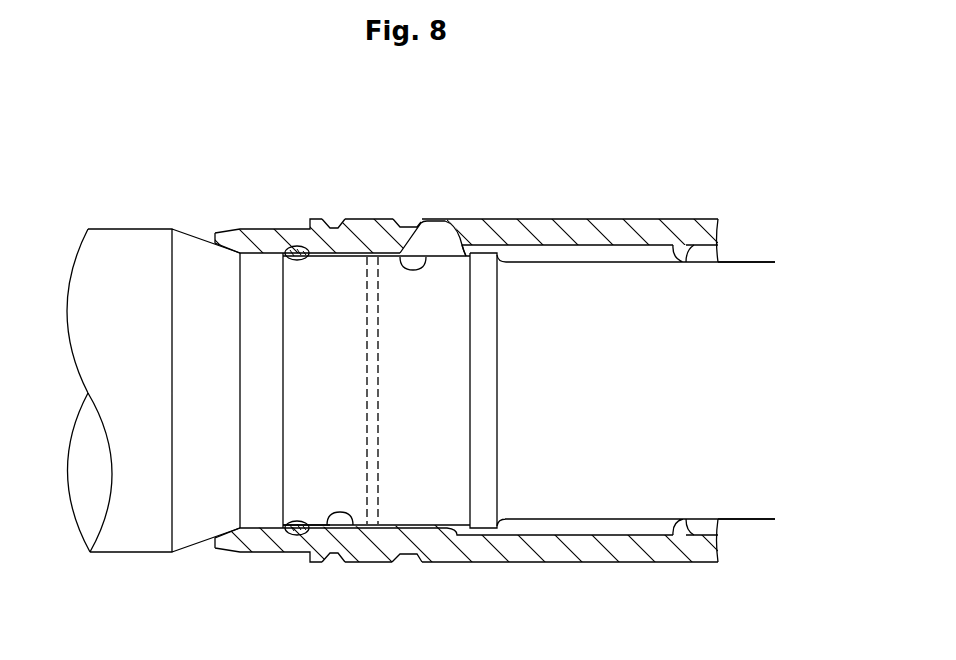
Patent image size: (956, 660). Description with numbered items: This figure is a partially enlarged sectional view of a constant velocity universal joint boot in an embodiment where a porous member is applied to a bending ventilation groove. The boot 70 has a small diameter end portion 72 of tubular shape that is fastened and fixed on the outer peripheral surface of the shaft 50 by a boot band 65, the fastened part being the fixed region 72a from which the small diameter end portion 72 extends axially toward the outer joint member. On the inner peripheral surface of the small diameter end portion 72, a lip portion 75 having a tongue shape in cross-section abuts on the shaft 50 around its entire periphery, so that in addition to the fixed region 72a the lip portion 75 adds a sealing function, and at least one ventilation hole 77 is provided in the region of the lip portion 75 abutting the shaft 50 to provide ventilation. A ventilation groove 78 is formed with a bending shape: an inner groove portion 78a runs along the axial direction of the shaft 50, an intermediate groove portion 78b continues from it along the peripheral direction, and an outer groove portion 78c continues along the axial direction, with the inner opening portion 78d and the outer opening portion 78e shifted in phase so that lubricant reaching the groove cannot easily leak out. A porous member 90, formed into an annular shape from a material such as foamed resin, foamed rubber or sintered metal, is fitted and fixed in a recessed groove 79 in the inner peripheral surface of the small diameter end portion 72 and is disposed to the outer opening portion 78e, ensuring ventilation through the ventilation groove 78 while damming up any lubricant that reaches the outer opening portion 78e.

The shaft 50 is at (142, 558).
The boot band 65 is at (400, 562).
The boot 70 is at (683, 211).
The small diameter end portion 72 is at (542, 232).
The fixed region 72a is at (339, 229).
The lip portion 75 is at (672, 248).
The ventilation hole 77 is at (685, 520).
The ventilation groove 78 is at (352, 344).
The inner groove portion 78a is at (444, 257).
The intermediate groove portion 78b is at (383, 398).
The outer groove portion 78c is at (356, 524).
The inner opening portion 78d is at (462, 259).
The outer opening portion 78e is at (295, 520).
The recessed groove 79 is at (284, 264).
The porous member 90 is at (285, 540).